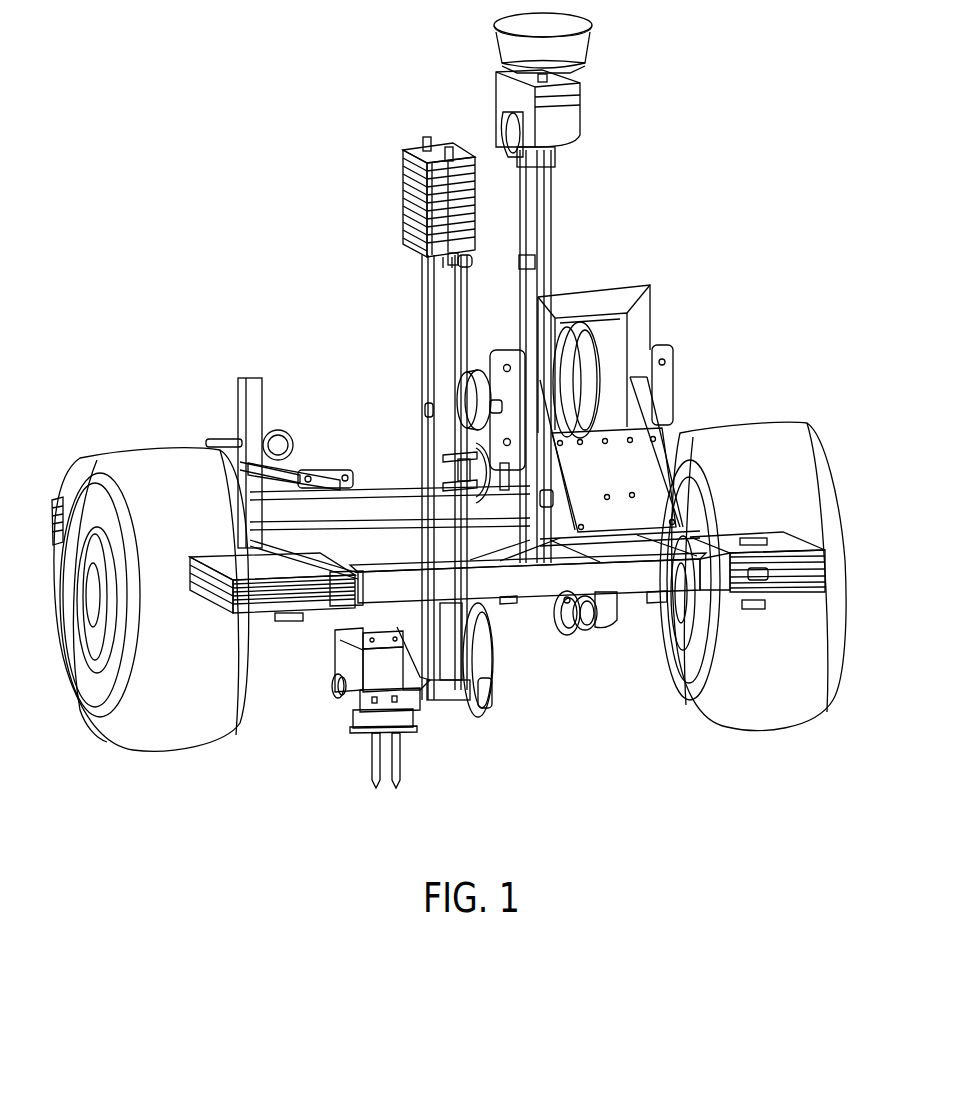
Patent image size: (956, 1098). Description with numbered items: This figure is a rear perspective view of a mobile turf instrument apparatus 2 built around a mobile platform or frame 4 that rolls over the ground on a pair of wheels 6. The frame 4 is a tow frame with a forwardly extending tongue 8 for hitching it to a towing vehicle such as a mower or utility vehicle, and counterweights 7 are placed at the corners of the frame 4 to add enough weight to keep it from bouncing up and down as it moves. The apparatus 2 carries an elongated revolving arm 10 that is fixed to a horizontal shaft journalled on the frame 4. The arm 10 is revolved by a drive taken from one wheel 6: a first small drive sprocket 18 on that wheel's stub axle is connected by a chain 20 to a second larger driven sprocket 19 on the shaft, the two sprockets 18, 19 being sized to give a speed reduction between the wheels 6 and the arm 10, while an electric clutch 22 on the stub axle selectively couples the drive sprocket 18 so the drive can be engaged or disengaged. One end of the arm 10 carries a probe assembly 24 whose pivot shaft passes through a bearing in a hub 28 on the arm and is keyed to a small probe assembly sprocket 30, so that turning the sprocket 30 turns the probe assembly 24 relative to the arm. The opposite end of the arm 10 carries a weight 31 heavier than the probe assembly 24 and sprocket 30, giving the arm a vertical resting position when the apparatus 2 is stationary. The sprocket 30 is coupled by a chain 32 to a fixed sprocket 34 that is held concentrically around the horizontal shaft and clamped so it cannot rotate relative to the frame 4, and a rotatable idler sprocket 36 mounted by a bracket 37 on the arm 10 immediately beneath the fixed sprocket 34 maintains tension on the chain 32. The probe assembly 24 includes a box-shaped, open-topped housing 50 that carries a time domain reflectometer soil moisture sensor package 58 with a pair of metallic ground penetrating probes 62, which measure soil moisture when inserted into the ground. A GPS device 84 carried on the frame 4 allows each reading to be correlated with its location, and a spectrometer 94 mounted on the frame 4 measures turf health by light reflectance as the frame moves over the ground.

The mobile turf instrument apparatus 2 is at (724, 226).
The frame 4 is at (522, 583).
The wheels 6 is at (148, 452).
The counterweights 7 is at (775, 538).
The tongue 8 is at (288, 465).
The revolving arm 10 is at (440, 332).
The drive sprocket 18 is at (563, 617).
The driven sprocket 19 is at (572, 368).
The chain 20 is at (588, 355).
The electric clutch 22 is at (606, 608).
The probe assembly 24 is at (336, 744).
The hub 28 is at (443, 700).
The probe assembly sprocket 30 is at (497, 688).
The weight 31 is at (408, 200).
The chain 32 is at (480, 635).
The fixed sprocket 34 is at (467, 400).
The idler sprocket 36 is at (480, 492).
The bracket 37 is at (447, 460).
The housing 50 is at (352, 695).
The soil moisture sensor package 58 is at (372, 662).
The ground penetrating probes 62 is at (366, 757).
The GPS device 84 is at (583, 48).
The spectrometer 94 is at (572, 115).